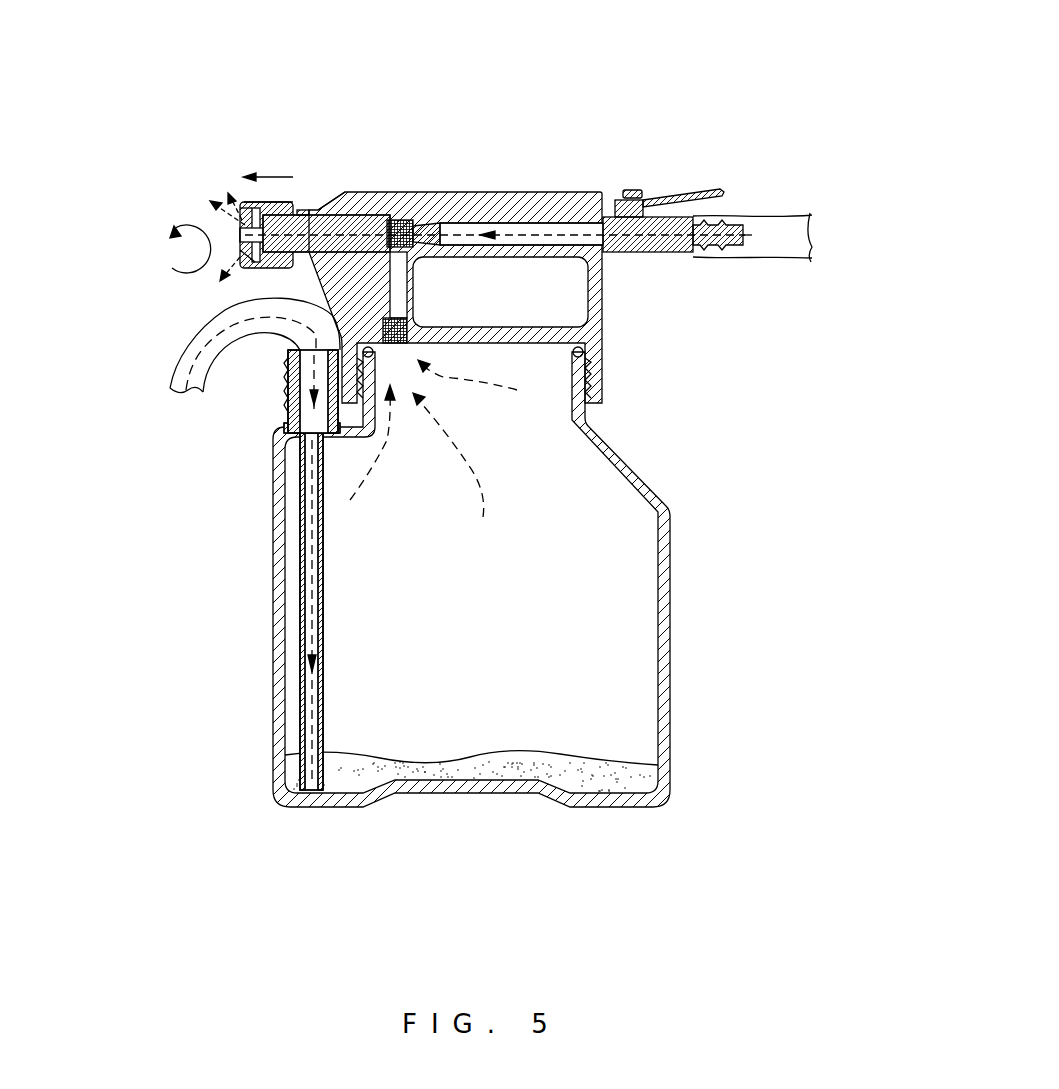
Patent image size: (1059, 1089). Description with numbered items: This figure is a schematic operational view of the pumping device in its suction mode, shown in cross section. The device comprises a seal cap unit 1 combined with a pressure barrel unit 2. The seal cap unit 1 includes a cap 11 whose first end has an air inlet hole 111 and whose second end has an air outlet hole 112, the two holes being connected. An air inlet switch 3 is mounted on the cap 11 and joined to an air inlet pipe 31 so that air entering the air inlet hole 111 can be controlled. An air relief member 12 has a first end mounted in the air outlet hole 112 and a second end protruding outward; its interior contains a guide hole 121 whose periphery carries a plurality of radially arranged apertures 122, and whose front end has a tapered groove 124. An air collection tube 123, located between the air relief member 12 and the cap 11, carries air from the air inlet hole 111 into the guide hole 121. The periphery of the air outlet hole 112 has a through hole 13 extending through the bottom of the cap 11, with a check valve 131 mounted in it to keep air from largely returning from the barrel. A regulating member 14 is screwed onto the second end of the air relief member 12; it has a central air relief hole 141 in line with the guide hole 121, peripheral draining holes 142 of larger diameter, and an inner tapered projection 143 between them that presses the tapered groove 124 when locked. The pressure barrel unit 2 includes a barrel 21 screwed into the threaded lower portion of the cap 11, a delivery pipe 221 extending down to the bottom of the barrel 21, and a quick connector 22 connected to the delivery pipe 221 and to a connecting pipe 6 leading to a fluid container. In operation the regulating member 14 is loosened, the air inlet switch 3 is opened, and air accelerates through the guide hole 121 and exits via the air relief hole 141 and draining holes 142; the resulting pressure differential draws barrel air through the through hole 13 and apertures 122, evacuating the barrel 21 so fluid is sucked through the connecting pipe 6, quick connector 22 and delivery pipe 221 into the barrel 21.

The seal cap unit 1 is at (736, 68).
The cap 11 is at (598, 345).
The air inlet hole 111 is at (537, 228).
The air outlet hole 112 is at (340, 192).
The air relief member 12 is at (302, 200).
The guide hole 121 is at (327, 205).
The apertures 122 is at (428, 228).
The air collection tube 123 is at (405, 222).
The tapered groove 124 is at (247, 200).
The through hole 13 is at (396, 288).
The check valve 131 is at (410, 320).
The regulating member 14 is at (258, 205).
The air relief hole 141 is at (240, 222).
The draining holes 142 is at (240, 252).
The tapered projection 143 is at (240, 213).
The pressure barrel unit 2 is at (724, 408).
The barrel 21 is at (668, 578).
The quick connector 22 is at (287, 387).
The delivery pipe 221 is at (300, 545).
The air inlet switch 3 is at (657, 200).
The air inlet pipe 31 is at (773, 233).
The connecting pipe 6 is at (197, 345).